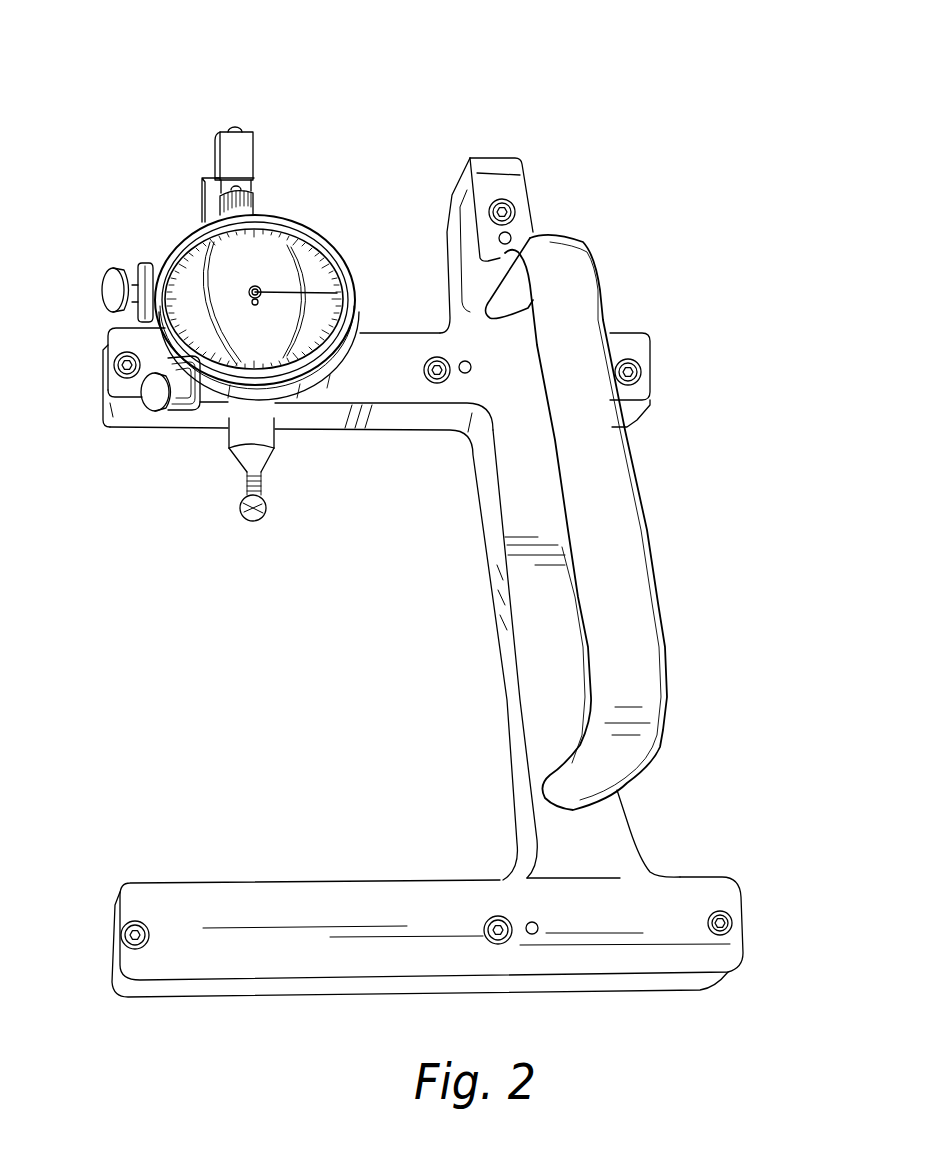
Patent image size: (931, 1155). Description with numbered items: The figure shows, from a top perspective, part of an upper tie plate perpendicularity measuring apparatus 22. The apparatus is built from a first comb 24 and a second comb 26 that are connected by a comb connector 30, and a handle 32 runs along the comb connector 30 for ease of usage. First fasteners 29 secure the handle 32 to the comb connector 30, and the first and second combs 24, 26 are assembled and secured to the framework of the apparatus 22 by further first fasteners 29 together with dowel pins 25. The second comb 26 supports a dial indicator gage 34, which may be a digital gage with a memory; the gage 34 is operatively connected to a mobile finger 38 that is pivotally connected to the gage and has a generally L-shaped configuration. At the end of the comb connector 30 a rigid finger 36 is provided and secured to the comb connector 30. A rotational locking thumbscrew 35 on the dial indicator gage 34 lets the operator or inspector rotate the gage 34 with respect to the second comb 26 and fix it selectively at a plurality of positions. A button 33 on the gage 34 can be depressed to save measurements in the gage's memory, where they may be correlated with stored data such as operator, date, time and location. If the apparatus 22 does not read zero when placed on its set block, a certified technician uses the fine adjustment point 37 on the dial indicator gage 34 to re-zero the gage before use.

The upper tie plate perpendicularity measuring apparatus 22 is at (145, 121).
The first comb 24 is at (242, 957).
The dowel pins 25 is at (470, 367).
The second comb 26 is at (378, 375).
The first fasteners 29 is at (115, 365).
The comb connector 30 is at (543, 655).
The handle 32 is at (577, 326).
The button 33 is at (113, 292).
The dial indicator gage 34 is at (300, 222).
The rotational locking thumbscrew 35 is at (153, 400).
The rigid finger 36 is at (495, 165).
The fine adjustment point 37 is at (263, 500).
The mobile finger 38 is at (243, 148).